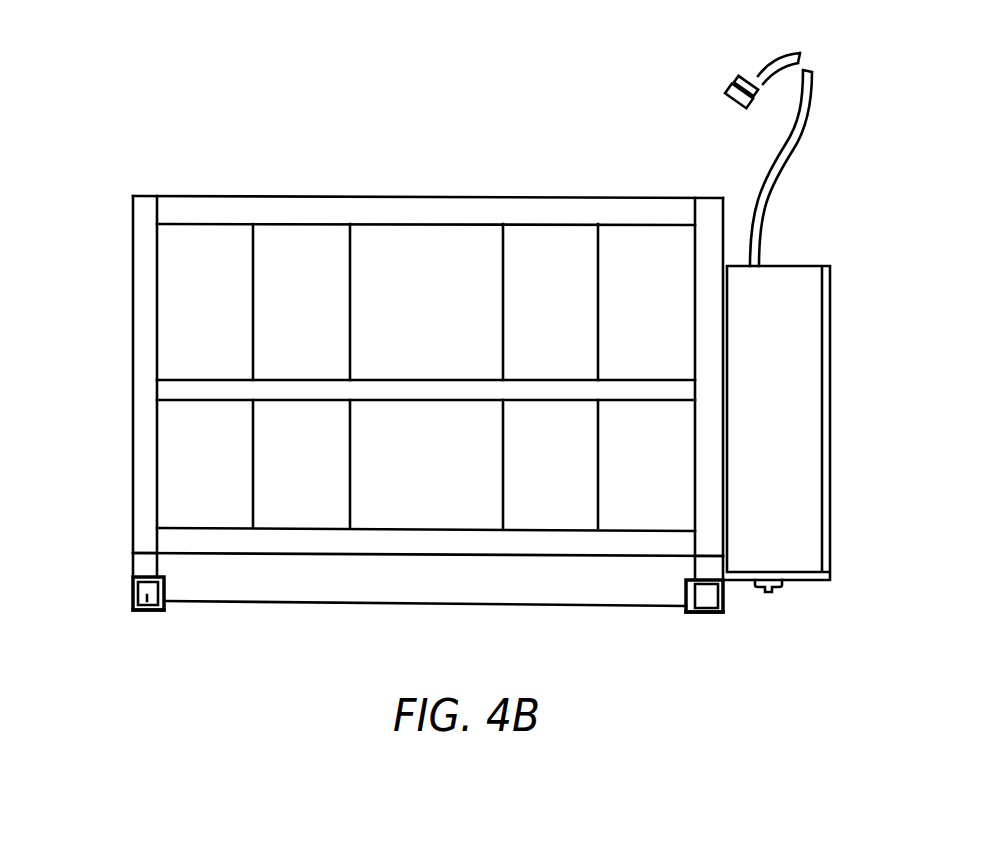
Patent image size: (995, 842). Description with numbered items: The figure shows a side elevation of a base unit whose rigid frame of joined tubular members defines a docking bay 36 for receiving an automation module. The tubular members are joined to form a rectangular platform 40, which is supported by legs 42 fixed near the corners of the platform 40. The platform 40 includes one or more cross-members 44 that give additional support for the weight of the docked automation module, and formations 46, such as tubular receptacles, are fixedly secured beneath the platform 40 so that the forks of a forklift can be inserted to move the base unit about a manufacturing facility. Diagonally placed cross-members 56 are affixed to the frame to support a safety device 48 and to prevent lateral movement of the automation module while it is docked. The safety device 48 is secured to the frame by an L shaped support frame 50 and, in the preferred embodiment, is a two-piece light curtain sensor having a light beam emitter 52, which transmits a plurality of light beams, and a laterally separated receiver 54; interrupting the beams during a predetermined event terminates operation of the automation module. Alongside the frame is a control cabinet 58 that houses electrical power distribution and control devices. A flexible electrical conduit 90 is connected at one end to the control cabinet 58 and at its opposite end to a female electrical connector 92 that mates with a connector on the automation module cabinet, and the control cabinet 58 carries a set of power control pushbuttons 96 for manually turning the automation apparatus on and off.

The docking bay 36 is at (443, 316).
The platform 40 is at (398, 221).
The legs 42 is at (146, 558).
The cross-members 44 is at (455, 385).
The formations 46 is at (332, 472).
The safety device 48 is at (128, 596).
The L shaped support frame 50 is at (132, 612).
The light beam emitter 52 is at (150, 598).
The receiver 54 is at (710, 598).
The diagonally placed cross-members 56 is at (143, 391).
The control cabinet 58 is at (795, 260).
The electrical conduit 90 is at (808, 117).
The female electrical connector 92 is at (728, 88).
The power control pushbuttons 96 is at (772, 594).